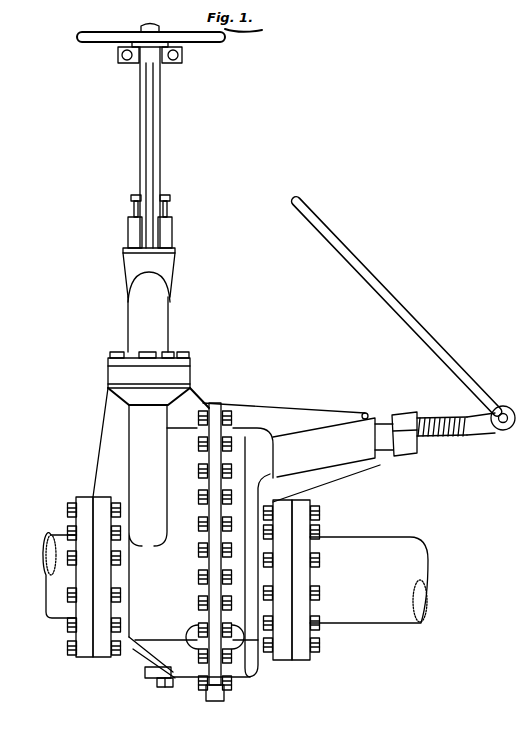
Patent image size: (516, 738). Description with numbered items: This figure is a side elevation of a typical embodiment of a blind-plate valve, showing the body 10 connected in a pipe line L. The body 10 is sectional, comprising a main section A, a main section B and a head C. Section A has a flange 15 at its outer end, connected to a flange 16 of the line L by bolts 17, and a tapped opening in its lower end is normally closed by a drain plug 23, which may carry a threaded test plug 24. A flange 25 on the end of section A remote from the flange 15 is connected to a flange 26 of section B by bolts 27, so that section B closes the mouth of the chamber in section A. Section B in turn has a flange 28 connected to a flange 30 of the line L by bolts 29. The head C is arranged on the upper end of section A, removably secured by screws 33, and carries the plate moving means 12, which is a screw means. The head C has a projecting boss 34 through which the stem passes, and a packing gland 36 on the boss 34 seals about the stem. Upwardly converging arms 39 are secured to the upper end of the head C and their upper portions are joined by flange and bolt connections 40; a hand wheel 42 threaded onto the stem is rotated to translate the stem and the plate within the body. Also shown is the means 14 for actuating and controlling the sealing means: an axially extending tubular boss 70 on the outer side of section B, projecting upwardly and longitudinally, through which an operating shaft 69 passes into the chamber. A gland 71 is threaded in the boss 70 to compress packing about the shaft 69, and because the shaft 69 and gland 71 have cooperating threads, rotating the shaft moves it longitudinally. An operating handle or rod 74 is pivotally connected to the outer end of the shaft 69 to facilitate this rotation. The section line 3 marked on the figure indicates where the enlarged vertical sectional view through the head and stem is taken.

The section line 3 is at (149, 0).
The body 10 is at (202, 398).
The plate moving means 12 is at (112, 52).
The sealing means actuating and controlling means 14 is at (402, 312).
The flange 15 is at (100, 658).
The flange of the line 16 is at (85, 658).
The bolts 17 is at (72, 658).
The drain plug 23 is at (158, 686).
The test plug 24 is at (166, 688).
The flange 25 is at (211, 590).
The flange 26 is at (221, 457).
The bolts 27 is at (229, 497).
The flange 28 is at (279, 660).
The bolts 29 is at (321, 645).
The flange of the line 30 is at (302, 660).
The screws 33 is at (125, 353).
The boss 34 is at (172, 224).
The packing gland 36 is at (171, 197).
The arms 39 is at (161, 84).
The flange and bolt connections 40 is at (181, 55).
The hand wheel 42 is at (97, 40).
The operating shaft 69 is at (430, 413).
The tubular boss 70 is at (333, 447).
The gland 71 is at (395, 413).
The operating handle 74 is at (397, 308).
The body section A is at (132, 455).
The body section B is at (238, 430).
The head C is at (148, 312).
The pipe line L is at (386, 548).